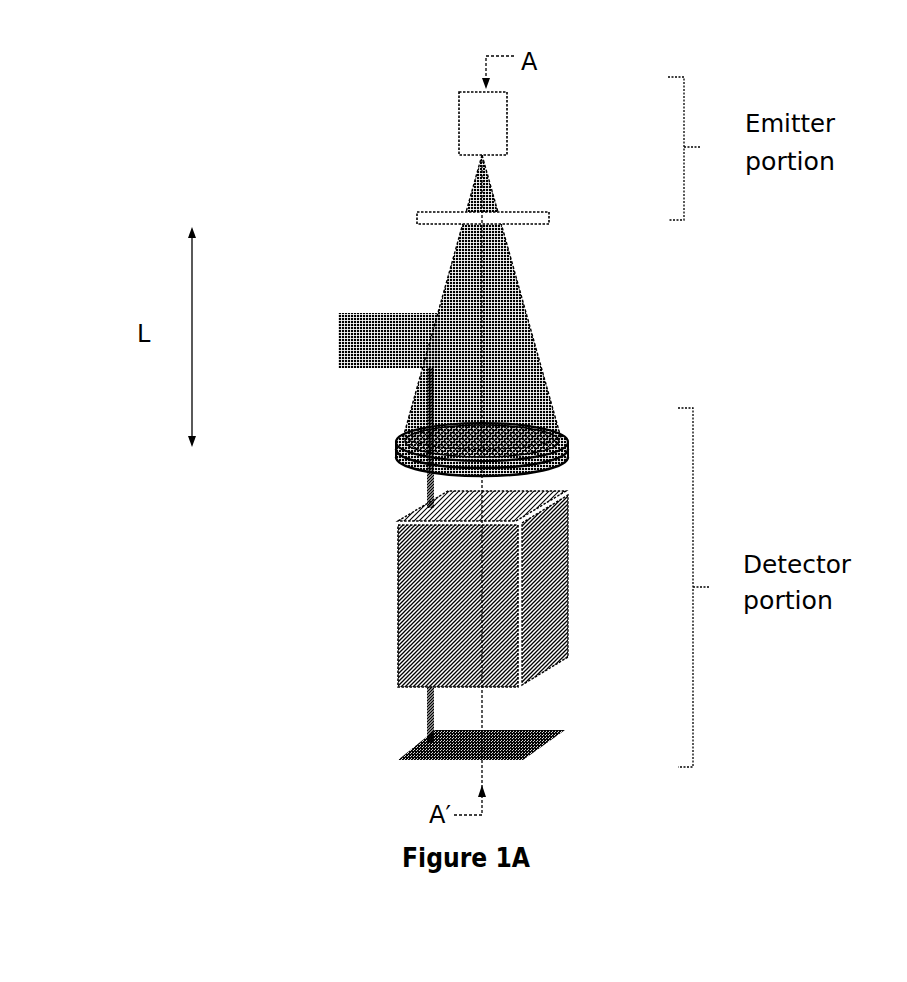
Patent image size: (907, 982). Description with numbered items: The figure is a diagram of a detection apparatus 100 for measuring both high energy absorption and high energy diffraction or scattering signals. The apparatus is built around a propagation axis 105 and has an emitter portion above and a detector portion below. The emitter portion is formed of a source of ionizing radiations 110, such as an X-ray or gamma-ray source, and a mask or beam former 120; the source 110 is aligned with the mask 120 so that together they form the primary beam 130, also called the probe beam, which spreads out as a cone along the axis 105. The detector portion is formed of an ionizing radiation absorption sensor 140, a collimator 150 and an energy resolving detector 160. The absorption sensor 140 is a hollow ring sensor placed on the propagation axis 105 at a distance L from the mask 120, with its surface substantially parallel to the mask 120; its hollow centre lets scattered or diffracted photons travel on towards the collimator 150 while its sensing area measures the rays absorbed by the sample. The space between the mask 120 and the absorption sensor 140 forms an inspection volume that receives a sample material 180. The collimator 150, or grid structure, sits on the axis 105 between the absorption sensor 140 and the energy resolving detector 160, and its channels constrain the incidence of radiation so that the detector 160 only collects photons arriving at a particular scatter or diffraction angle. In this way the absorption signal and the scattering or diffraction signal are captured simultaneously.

The detection apparatus 100 is at (225, 762).
The propagation axis 105 is at (478, 770).
The source of ionizing radiations 110 is at (507, 138).
The mask or beam former 120 is at (549, 218).
The primary beam 130 is at (512, 242).
The ionizing radiation absorption sensor 140 is at (568, 450).
The collimator 150 is at (570, 568).
The energy resolving detector 160 is at (560, 730).
The sample material 180 is at (338, 313).